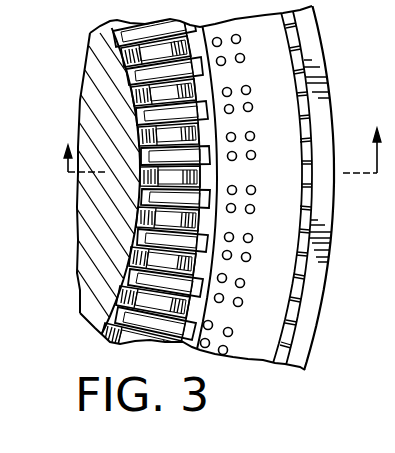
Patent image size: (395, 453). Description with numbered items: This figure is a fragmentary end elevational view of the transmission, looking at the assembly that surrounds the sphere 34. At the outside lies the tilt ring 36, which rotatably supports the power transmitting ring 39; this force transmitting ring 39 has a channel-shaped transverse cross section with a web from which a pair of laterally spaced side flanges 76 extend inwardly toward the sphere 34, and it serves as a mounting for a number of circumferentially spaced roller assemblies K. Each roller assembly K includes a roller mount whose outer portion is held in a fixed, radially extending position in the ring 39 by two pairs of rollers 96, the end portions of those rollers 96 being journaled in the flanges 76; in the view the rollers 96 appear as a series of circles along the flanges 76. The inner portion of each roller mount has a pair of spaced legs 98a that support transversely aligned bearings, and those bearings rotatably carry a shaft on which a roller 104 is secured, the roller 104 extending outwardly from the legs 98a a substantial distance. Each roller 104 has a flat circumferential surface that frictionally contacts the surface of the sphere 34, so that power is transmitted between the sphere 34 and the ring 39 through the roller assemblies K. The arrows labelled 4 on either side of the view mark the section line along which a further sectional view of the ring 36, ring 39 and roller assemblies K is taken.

The sphere 34 is at (85, 320).
The tilt ring 36 is at (317, 334).
The power transmitting ring 39 is at (240, 352).
The side flanges 76 is at (286, 184).
The rollers 96 is at (235, 35).
The legs 98a is at (157, 200).
The roller 104 is at (137, 96).
The roller assembly K is at (173, 343).
The section line 4- 4 is at (217, 135).